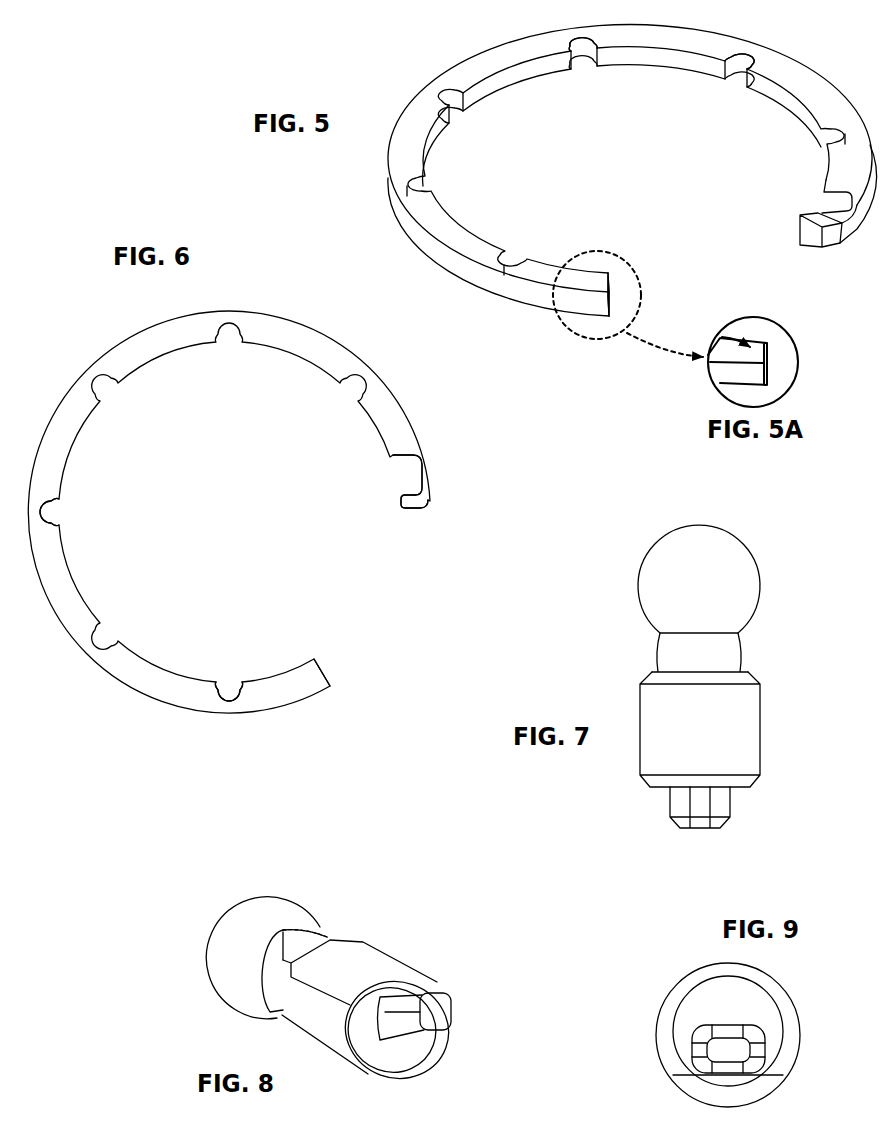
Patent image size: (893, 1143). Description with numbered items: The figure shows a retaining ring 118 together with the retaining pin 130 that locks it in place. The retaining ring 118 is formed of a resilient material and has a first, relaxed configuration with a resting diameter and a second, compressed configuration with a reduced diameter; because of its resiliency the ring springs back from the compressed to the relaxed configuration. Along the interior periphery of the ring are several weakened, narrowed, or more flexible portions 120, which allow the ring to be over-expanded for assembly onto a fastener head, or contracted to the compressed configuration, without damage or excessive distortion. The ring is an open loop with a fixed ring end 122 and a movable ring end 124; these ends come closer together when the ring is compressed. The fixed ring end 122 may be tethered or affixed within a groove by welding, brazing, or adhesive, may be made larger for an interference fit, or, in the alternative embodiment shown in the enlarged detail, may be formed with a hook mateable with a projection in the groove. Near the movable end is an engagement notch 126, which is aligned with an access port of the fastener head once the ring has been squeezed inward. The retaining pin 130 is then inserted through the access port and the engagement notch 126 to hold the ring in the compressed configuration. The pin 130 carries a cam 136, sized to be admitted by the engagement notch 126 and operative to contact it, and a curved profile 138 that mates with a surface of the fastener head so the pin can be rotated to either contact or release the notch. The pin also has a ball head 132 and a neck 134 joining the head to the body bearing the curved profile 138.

In FIG. 5, the retaining ring 118 is at (365, 168).
In FIG. 6, the retaining ring 118 is at (233, 299).
In FIG. 5, the flexible portions 120 is at (742, 88).
In FIG. 6, the flexible portions 120 is at (63, 514).
In FIG. 5, the fixed ring end 122 is at (601, 270).
In FIG. 6, the fixed ring end 122 is at (330, 650).
In FIG. 5, the movable ring end 124 is at (786, 233).
In FIG. 6, the movable ring end 124 is at (407, 521).
In FIG. 5, the engagement notch 126 is at (816, 203).
In FIG. 6, the engagement notch 126 is at (399, 472).
In FIG. 7, the retaining pin 130 is at (653, 650).
In FIG. 8, the retaining pin 130 is at (333, 967).
In FIG. 9, the retaining pin 130 is at (657, 1017).
In FIG. 7, the ball 132 is at (656, 584).
In FIG. 8, the ball 132 is at (216, 968).
In FIG. 7, the neck 134 is at (661, 655).
In FIG. 8, the neck 134 is at (259, 983).
In FIG. 7, the cam 136 is at (676, 808).
In FIG. 8, the cam 136 is at (444, 1002).
In FIG. 9, the cam 136 is at (706, 1043).
In FIG. 7, the curved profile 138 is at (712, 736).
In FIG. 8, the curved profile 138 is at (364, 954).
In FIG. 9, the curved profile 138 is at (707, 982).